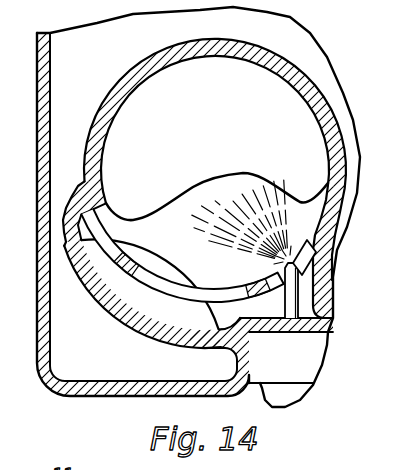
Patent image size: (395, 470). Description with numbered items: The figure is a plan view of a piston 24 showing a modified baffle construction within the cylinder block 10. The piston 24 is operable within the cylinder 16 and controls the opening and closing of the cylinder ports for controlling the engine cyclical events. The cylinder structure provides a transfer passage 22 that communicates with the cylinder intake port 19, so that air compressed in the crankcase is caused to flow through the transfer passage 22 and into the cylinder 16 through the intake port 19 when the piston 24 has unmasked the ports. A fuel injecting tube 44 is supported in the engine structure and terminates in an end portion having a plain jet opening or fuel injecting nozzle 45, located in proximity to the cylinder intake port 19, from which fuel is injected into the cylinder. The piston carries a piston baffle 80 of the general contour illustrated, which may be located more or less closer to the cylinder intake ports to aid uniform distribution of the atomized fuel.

The cylinder block 10 is at (127, 396).
The cylinder 16 is at (300, 73).
The intake port 19 is at (155, 278).
The transfer passage 22 is at (165, 306).
The piston 24 is at (217, 146).
The fuel injecting tube 44 is at (294, 290).
The fuel injecting nozzle 45 is at (291, 243).
The piston baffle 80 is at (228, 174).